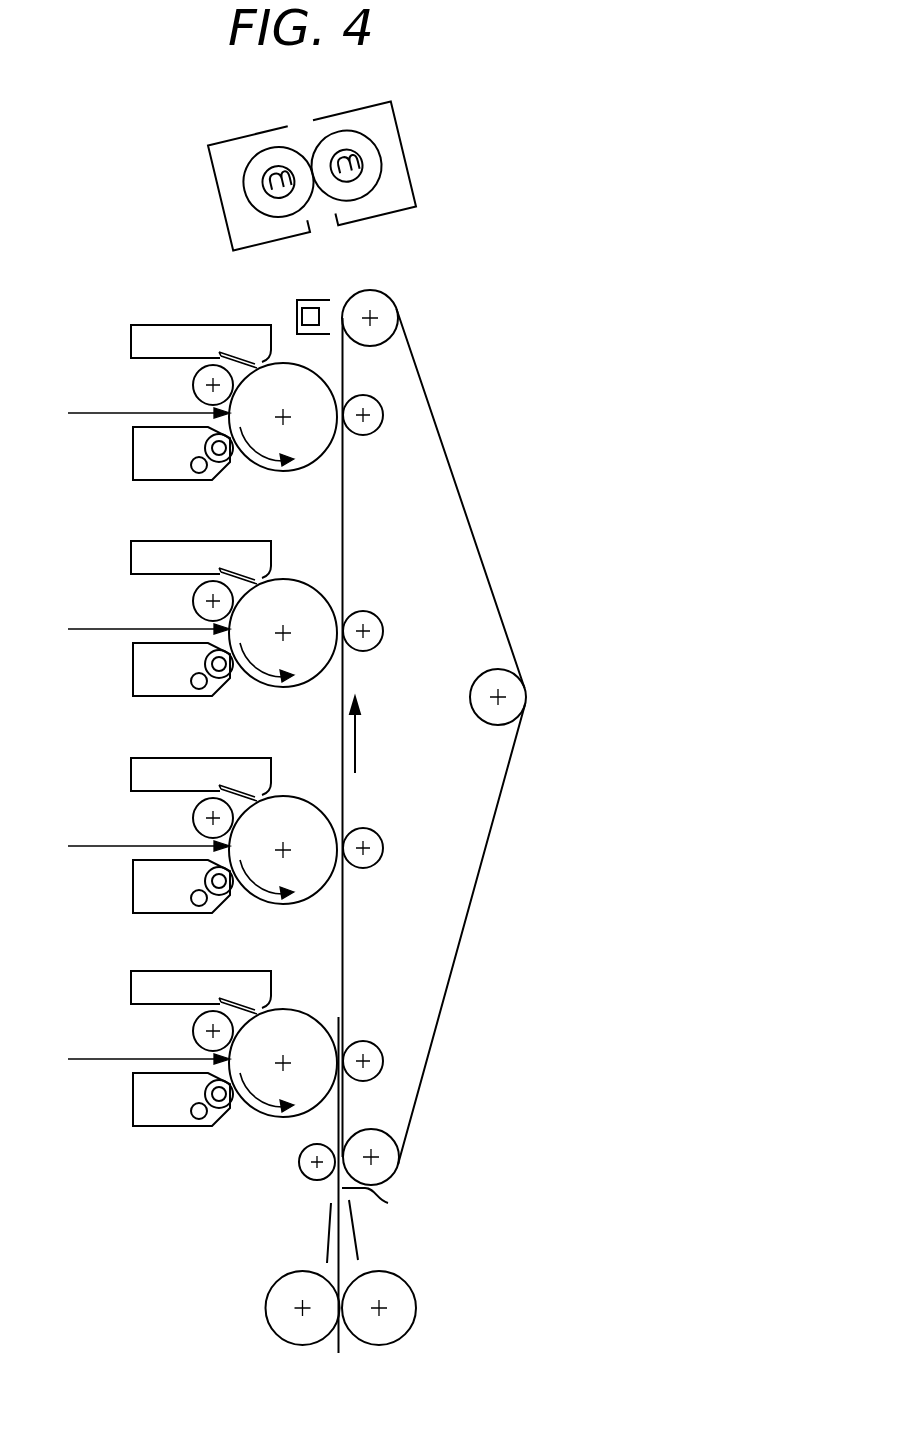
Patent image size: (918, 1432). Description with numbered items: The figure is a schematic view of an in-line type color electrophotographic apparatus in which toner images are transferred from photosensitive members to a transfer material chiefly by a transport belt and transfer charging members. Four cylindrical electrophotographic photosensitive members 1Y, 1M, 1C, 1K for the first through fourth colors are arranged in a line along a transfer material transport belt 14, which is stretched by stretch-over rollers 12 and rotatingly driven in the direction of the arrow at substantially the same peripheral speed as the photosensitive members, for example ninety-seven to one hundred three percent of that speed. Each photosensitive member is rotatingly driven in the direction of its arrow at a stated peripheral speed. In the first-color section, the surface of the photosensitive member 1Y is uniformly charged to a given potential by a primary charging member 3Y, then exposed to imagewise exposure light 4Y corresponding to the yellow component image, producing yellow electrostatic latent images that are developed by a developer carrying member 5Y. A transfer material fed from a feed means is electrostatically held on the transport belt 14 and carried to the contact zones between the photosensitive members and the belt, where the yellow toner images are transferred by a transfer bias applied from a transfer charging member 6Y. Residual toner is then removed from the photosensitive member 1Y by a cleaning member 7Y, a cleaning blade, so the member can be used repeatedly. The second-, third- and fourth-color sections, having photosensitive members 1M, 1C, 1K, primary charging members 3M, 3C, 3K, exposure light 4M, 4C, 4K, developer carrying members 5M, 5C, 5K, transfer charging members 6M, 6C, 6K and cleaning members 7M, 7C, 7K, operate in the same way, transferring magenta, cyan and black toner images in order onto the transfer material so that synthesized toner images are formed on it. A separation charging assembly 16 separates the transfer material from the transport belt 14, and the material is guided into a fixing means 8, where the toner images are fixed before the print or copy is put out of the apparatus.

The electrophotographic photosensitive member for fourth color 1K is at (297, 461).
The electrophotographic photosensitive member for third color 1C is at (297, 677).
The electrophotographic photosensitive member for second color 1M is at (297, 894).
The electrophotographic photosensitive member for first color 1Y is at (263, 1107).
The primary charging member for fourth color 3K is at (193, 385).
The primary charging member for third color 3C is at (193, 601).
The primary charging member for second color 3M is at (193, 818).
The primary charging member for first color 3Y is at (193, 1031).
The exposure light for fourth color 4K is at (132, 415).
The exposure light for third color 4C is at (132, 631).
The exposure light for second color 4M is at (132, 848).
The exposure light for first color 4Y is at (132, 1061).
The developer carrying member for fourth color 5K is at (138, 452).
The developer carrying member for third color 5C is at (138, 668).
The developer carrying member for second color 5M is at (138, 885).
The developer carrying member for first color 5Y is at (138, 1098).
The transfer charging member for fourth color 6K is at (370, 1051).
The transfer charging member for third color 6C is at (370, 838).
The transfer charging member for second color 6M is at (370, 621).
The transfer charging member for first color 6Y is at (370, 426).
The cleaning member for fourth color 7K is at (147, 332).
The cleaning member for third color 7C is at (147, 548).
The cleaning member for second color 7M is at (147, 765).
The cleaning member for first color 7Y is at (147, 978).
The fixing means 8 is at (377, 163).
The stretch-over rollers 12 is at (388, 308).
The transfer material transport belt 14 is at (500, 803).
The separation charging assembly 16 is at (295, 303).